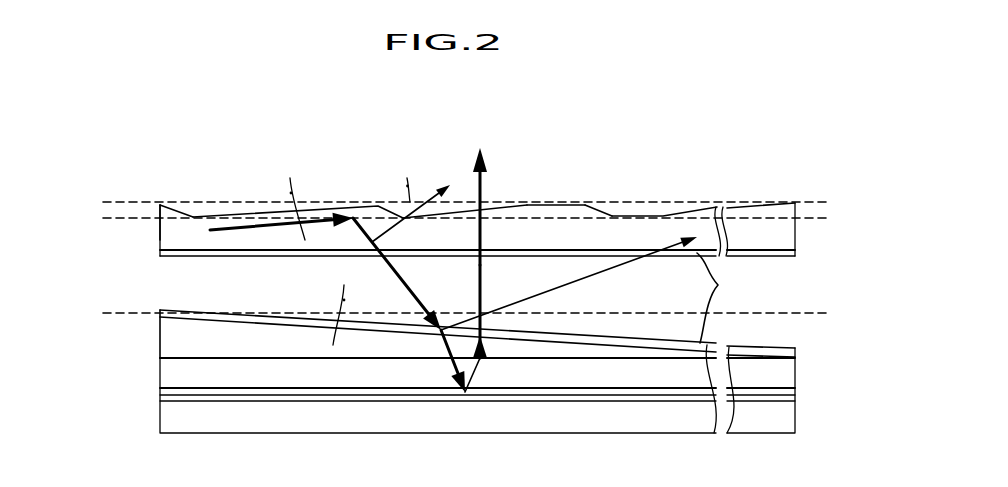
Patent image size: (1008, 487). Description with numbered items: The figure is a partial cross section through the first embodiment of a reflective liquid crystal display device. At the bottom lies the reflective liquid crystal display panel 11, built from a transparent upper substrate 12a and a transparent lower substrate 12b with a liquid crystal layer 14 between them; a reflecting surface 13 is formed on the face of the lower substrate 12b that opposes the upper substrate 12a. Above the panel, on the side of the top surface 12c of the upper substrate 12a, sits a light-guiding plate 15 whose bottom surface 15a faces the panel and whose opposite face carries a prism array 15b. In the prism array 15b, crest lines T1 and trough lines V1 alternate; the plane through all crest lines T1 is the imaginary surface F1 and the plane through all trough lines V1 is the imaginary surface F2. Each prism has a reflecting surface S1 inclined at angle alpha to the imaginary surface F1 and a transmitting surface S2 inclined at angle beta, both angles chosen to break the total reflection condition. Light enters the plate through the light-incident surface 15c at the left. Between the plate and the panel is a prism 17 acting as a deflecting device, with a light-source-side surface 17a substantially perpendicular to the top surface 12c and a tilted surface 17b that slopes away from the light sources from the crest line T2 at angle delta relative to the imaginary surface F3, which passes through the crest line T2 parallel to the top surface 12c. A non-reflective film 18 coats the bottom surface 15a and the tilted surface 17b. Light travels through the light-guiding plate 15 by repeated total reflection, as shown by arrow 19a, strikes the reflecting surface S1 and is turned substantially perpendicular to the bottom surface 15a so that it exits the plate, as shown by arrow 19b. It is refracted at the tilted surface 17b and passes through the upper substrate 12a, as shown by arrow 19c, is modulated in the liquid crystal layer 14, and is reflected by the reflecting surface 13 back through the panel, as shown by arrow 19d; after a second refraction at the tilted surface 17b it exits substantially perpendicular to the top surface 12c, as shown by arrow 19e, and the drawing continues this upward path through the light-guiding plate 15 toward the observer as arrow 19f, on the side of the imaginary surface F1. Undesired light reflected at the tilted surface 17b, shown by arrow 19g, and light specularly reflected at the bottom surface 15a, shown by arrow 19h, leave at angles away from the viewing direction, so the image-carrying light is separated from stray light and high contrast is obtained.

The reflective liquid crystal display panel 11 is at (167, 367).
The transparent upper substrate 12a is at (177, 378).
The transparent lower substrate 12b is at (170, 415).
The top surface of the upper substrate 12c is at (270, 353).
The reflecting surface 13 is at (627, 401).
The liquid crystal layer 14 is at (564, 401).
The light-guiding plate 15 is at (177, 240).
The bottom surface of the light-guiding plate 15a is at (618, 256).
The prism array 15b is at (713, 204).
The light-incident surface 15c is at (156, 213).
The prism 17 is at (284, 333).
The light-source-side surface 17a is at (158, 332).
The tilted surface 17b is at (683, 343).
The non-reflective film 18 is at (723, 298).
The arrow showing light transmitted in the light-guiding plate 19a is at (228, 231).
The arrow showing light exiting the light-guiding plate 19b is at (390, 273).
The arrow showing light entering the panel 19c is at (438, 345).
The arrow showing light reflected by the reflecting surface 19d is at (476, 390).
The arrow showing light exiting the panel 19e is at (478, 273).
The emitted light 19f is at (481, 198).
The arrow showing light reflected at the tilted surface 19g is at (557, 283).
The arrow showing light reflected at the bottom surface 19h is at (418, 212).
The imaginary surface through the crest lines F1 is at (117, 198).
The imaginary surface through the trough lines F2 is at (148, 222).
The imaginary surface through crest line T2 F3 is at (605, 313).
The reflecting surface of the prism array S1 is at (603, 212).
The transmitting surface of the prism array S2 is at (530, 203).
The crest lines T1 is at (382, 207).
The crest line of the prism T2 is at (159, 308).
The trough lines V1 is at (193, 215).